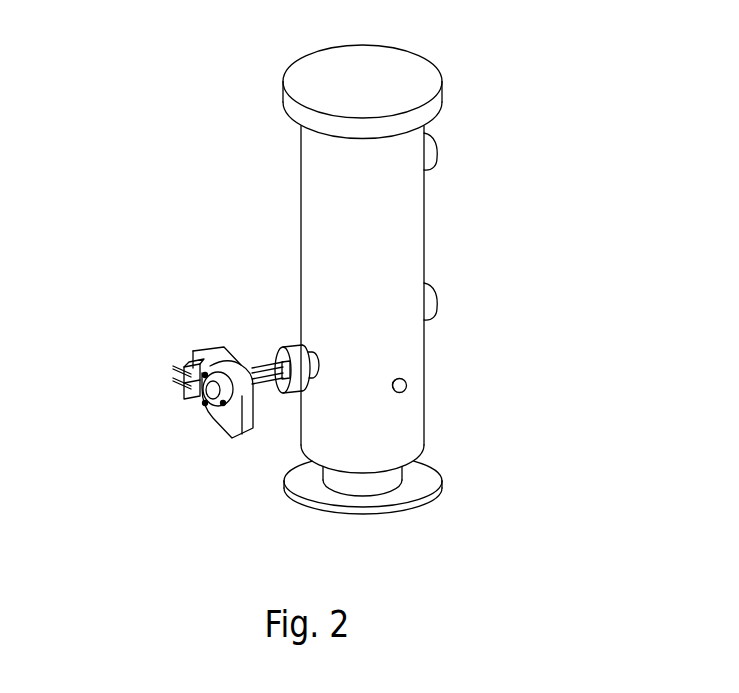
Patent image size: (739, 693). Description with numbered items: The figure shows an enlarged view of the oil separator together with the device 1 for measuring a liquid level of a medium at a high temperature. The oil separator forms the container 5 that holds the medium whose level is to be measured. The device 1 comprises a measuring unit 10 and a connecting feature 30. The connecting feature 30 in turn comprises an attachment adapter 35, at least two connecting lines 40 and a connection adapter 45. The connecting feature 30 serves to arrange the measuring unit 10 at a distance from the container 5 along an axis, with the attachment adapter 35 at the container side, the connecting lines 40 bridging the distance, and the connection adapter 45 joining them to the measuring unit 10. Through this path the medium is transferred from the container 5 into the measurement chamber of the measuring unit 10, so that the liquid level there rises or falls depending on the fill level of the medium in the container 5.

The device for measuring a liquid level 1 is at (123, 317).
The container 5 is at (458, 253).
The measuring unit 10 is at (188, 421).
The connecting feature 30 is at (220, 268).
The attachment adapter 35 is at (287, 347).
The connecting lines 40 is at (265, 357).
The connection adapter 45 is at (241, 357).